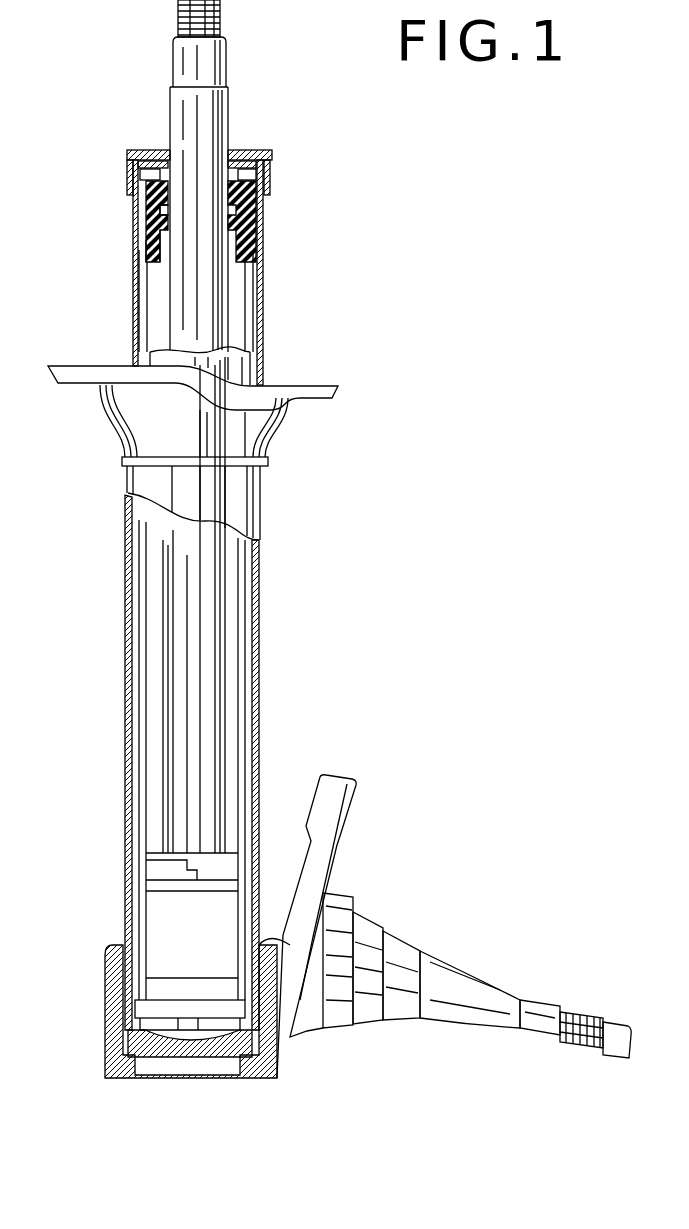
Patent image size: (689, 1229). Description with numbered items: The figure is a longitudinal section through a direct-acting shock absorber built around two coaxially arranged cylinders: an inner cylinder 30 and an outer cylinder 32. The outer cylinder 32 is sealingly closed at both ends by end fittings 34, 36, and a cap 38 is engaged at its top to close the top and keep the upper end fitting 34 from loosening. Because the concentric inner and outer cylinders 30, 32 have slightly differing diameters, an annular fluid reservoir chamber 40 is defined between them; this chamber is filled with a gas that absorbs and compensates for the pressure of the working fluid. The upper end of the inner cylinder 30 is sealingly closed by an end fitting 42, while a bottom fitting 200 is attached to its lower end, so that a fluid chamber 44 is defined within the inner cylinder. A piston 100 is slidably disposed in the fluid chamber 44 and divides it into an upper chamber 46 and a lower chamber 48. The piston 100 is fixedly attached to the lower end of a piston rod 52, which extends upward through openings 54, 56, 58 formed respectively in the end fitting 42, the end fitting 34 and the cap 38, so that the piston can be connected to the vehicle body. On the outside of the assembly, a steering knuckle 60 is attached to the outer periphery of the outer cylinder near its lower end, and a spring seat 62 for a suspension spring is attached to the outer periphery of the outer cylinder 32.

The inner cylinder 30 is at (252, 650).
The outer cylinder 32 is at (260, 556).
The end fitting 34 is at (270, 172).
The end fitting 36 is at (152, 1047).
The cap 38 is at (252, 150).
The fluid reservoir chamber 40 is at (128, 662).
The end fitting 42 is at (266, 220).
The fluid chamber 44 is at (236, 702).
The upper chamber 46 is at (155, 730).
The lower chamber 48 is at (163, 910).
The piston rod 52 is at (180, 549).
The opening 54 is at (170, 248).
The opening 56 is at (164, 211).
The opening 58 is at (160, 174).
The steering knuckle 60 is at (403, 963).
The spring seat 62 is at (253, 436).
The piston 100 is at (166, 872).
The bottom fitting 200 is at (143, 1007).